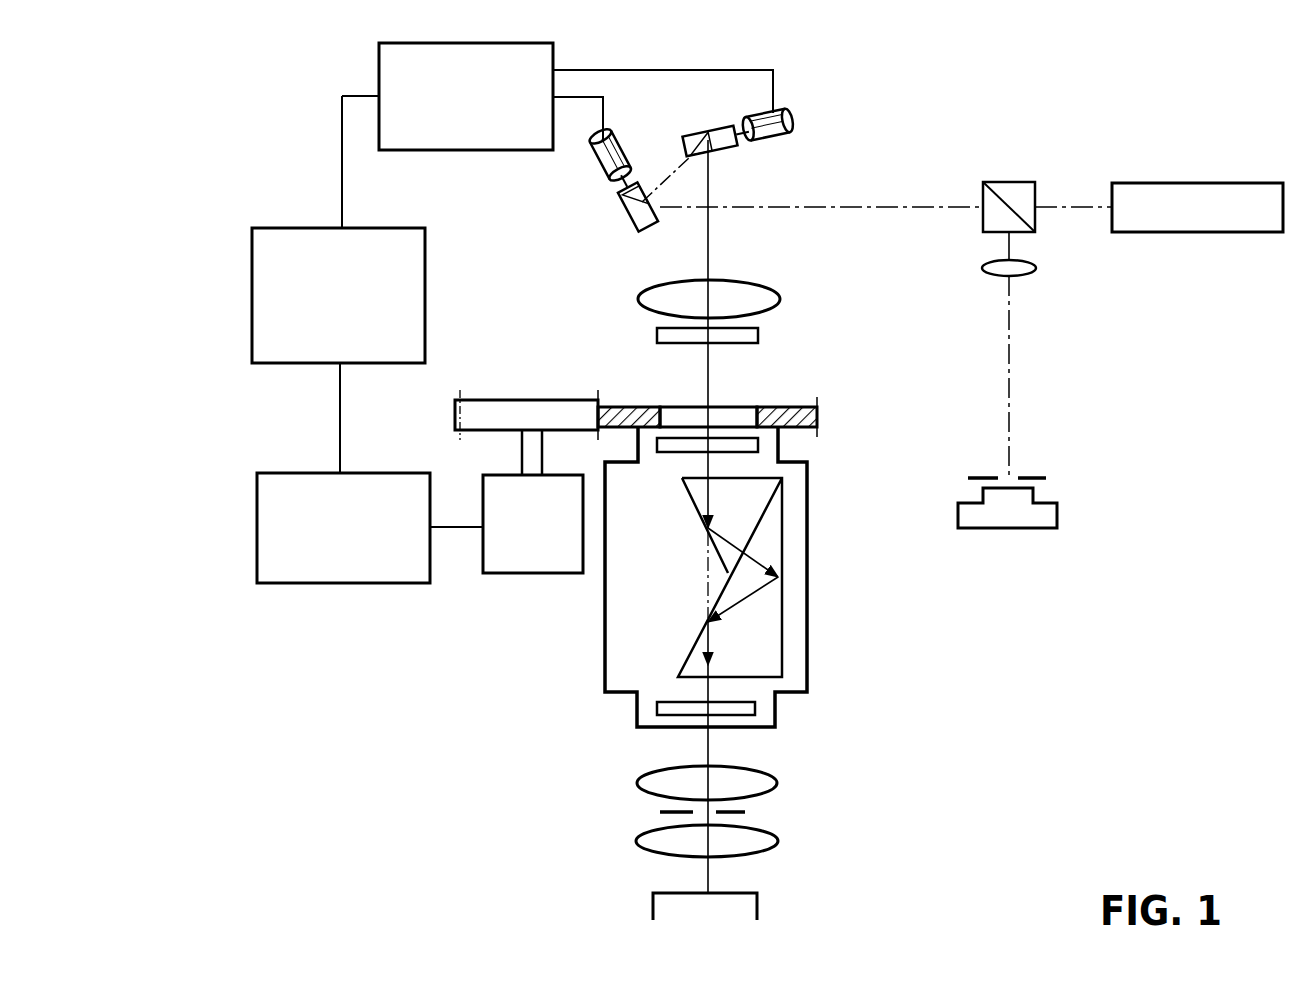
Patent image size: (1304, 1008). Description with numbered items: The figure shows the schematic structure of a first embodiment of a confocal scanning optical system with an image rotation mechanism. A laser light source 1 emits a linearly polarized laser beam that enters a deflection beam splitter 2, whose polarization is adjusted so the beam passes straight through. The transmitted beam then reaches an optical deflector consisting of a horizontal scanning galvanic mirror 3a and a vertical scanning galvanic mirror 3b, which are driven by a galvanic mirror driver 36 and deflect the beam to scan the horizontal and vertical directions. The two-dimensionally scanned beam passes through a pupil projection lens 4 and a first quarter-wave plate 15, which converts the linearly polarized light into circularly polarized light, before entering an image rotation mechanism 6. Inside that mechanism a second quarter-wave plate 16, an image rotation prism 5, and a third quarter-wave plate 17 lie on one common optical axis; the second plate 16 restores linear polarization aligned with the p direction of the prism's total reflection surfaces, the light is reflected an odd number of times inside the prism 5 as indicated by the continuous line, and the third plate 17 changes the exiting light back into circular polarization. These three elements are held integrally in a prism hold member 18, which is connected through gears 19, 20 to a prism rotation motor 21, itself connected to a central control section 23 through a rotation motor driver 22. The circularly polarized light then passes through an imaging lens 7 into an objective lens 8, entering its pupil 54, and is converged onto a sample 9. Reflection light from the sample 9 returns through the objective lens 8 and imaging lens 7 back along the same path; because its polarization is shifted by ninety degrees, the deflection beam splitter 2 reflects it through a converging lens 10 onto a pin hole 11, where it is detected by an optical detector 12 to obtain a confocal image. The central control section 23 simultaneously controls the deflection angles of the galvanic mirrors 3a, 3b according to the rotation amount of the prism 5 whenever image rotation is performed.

The laser light source 1 is at (1205, 233).
The deflection beam splitter 2 is at (1016, 190).
The horizontal scanning galvanic mirror 3a is at (705, 129).
The vertical scanning galvanic mirror 3b is at (628, 219).
The pupil projection lens 4 is at (748, 292).
The image rotation prism 5 is at (768, 652).
The image rotation mechanism 6 is at (822, 585).
The imaging lens 7 is at (758, 785).
The objective lens 8 is at (757, 841).
The sample 9 is at (748, 912).
The converging lens 10 is at (1020, 271).
The pin hole 11 is at (1035, 476).
The optical detector 12 is at (1018, 515).
The first λ/4 plate 15 is at (760, 336).
The second λ/4 plate 16 is at (668, 450).
The third λ/4 plate 17 is at (757, 710).
The prism hold member 18 is at (612, 649).
The gear 19 is at (630, 406).
The gear 20 is at (558, 400).
The prism rotation motor 21 is at (516, 565).
The rotation motor driver 22 is at (340, 585).
The central control section 23 is at (428, 312).
The galvanic mirror driver 36 is at (468, 151).
The pupil 54 is at (748, 812).